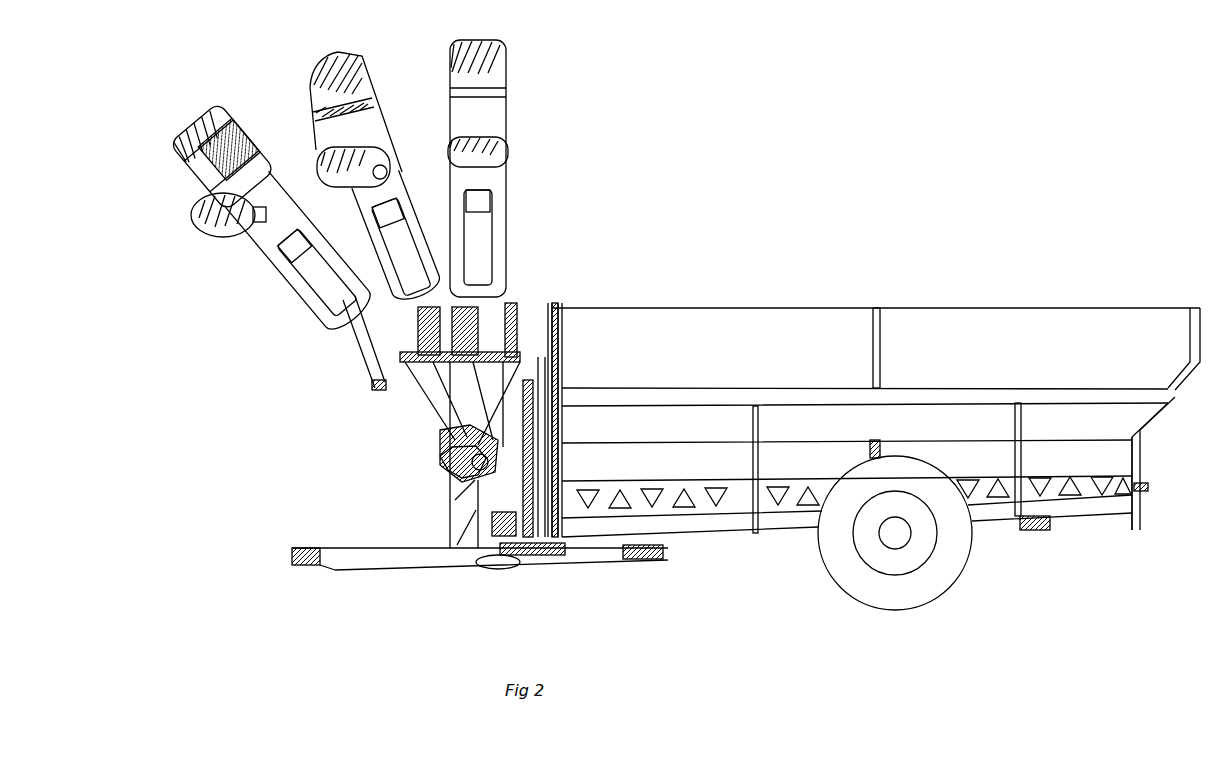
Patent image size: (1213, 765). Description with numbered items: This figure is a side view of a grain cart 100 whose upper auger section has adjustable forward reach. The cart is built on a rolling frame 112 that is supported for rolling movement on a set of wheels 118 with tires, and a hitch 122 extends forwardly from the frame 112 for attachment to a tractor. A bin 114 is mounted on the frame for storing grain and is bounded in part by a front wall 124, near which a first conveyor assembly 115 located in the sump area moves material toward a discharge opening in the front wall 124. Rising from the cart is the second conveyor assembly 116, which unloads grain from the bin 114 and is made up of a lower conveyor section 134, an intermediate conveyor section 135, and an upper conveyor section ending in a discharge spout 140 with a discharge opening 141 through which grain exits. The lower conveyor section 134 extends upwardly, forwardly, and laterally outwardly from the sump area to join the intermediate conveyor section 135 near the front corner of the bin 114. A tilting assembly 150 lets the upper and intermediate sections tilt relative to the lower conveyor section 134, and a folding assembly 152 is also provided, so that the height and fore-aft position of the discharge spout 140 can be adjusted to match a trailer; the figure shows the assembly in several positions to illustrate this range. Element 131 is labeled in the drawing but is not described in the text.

The grain cart 100 is at (775, 163).
The rolling frame 112 is at (1136, 530).
The bin 114 is at (1197, 295).
The first conveyor assembly 115 is at (718, 522).
The second conveyor assembly 116 is at (288, 318).
The wheels 118 is at (908, 606).
The hitch 122 is at (318, 567).
The front wall 124 is at (550, 300).
The arm body 131 is at (262, 256).
The lower conveyor section 134 is at (448, 560).
The intermediate conveyor section 135 is at (412, 428).
The discharge spout 140 is at (318, 148).
The discharge opening 141 is at (522, 152).
The tilting assembly 150 is at (445, 470).
The folding assembly 152 is at (385, 388).